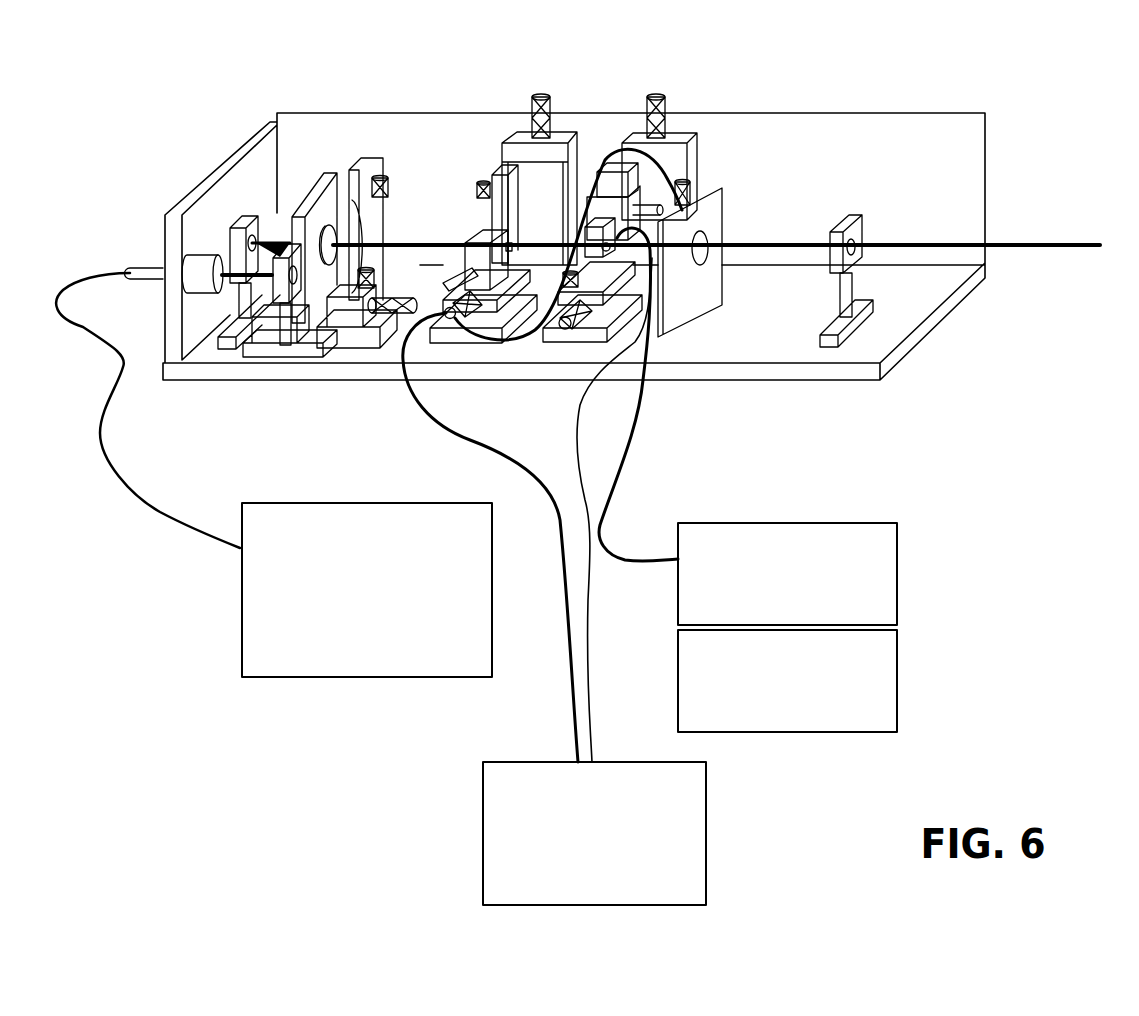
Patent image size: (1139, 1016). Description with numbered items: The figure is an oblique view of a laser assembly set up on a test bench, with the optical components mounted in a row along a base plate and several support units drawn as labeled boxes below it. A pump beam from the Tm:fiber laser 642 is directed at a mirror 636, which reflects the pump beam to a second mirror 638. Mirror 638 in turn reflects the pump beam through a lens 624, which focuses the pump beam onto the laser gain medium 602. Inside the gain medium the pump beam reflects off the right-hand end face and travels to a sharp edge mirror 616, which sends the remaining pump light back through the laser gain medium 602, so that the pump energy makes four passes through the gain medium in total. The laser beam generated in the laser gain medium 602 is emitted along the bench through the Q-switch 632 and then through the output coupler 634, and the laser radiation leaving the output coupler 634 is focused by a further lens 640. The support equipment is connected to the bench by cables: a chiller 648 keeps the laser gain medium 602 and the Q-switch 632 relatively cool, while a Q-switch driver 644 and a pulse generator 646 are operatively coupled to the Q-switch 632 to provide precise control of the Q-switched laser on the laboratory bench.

The laser gain medium 602 is at (482, 221).
The sharp edge mirror 616 is at (356, 191).
The lens 624 is at (317, 191).
The Q-switch 632 is at (609, 211).
The output coupler 634 is at (716, 173).
The mirror 636 is at (290, 245).
The mirror 638 is at (243, 210).
The lens 640 is at (858, 203).
The Tm:fiber laser 642 is at (346, 612).
The Q-switch driver 644 is at (768, 616).
The pulse generator 646 is at (766, 706).
The chiller 648 is at (570, 856).